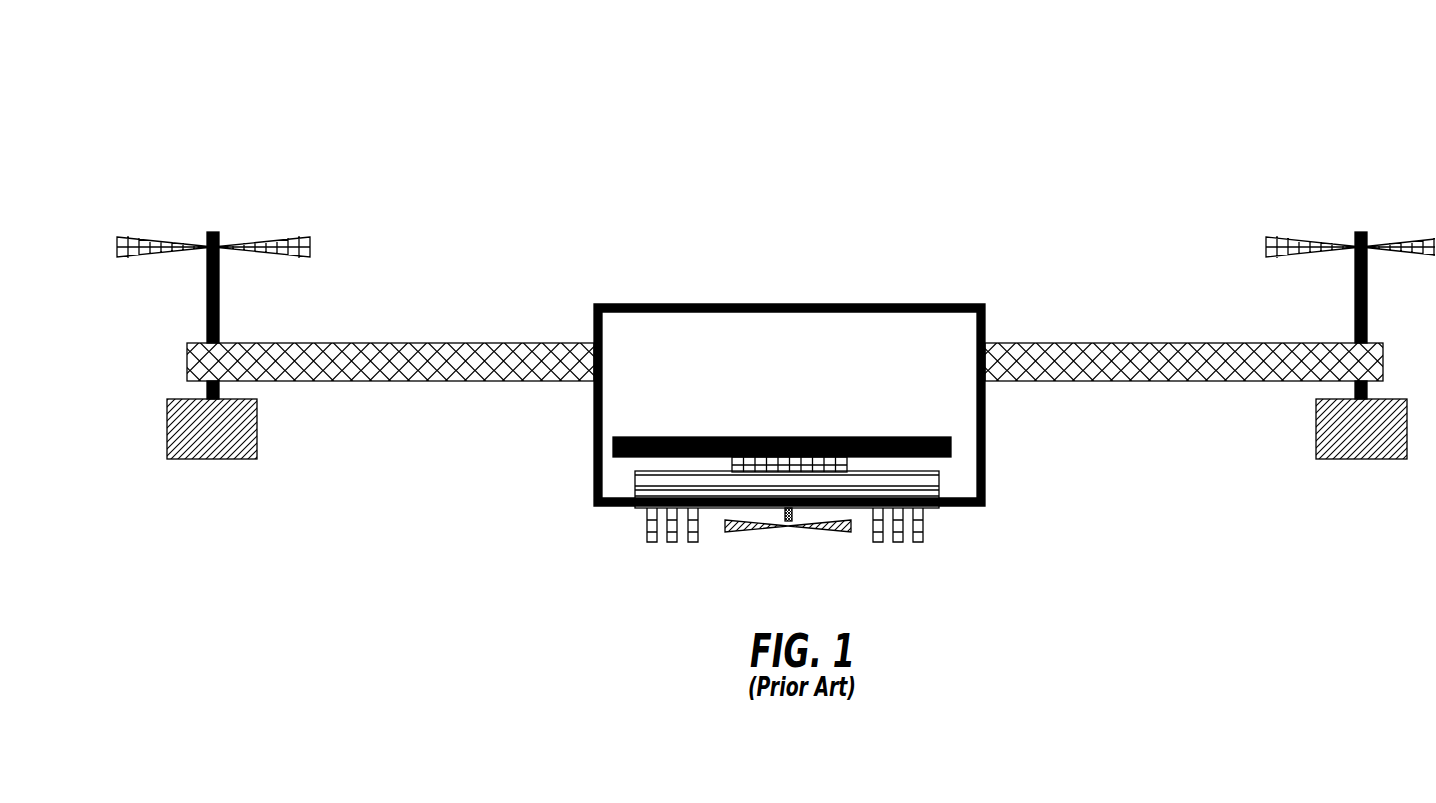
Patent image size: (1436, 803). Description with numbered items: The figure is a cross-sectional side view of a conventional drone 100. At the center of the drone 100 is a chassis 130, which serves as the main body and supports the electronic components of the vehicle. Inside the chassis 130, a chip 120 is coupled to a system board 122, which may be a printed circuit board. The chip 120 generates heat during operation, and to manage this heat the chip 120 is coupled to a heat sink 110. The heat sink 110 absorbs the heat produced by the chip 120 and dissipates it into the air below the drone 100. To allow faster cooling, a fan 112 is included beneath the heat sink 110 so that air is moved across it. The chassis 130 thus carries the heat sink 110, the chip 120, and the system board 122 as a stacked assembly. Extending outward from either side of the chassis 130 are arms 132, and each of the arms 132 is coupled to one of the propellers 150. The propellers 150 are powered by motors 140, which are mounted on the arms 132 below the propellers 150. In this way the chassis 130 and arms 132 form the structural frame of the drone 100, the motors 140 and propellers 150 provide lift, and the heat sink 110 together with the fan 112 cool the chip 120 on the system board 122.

The drone 100 is at (1024, 105).
The heat sink 110 is at (922, 506).
The fan 112 is at (738, 528).
The chip 120 is at (847, 466).
The system board 122 is at (951, 445).
The chassis 130 is at (804, 304).
The arms 132 is at (424, 346).
The motors 140 is at (205, 451).
The propellers 150 is at (210, 232).